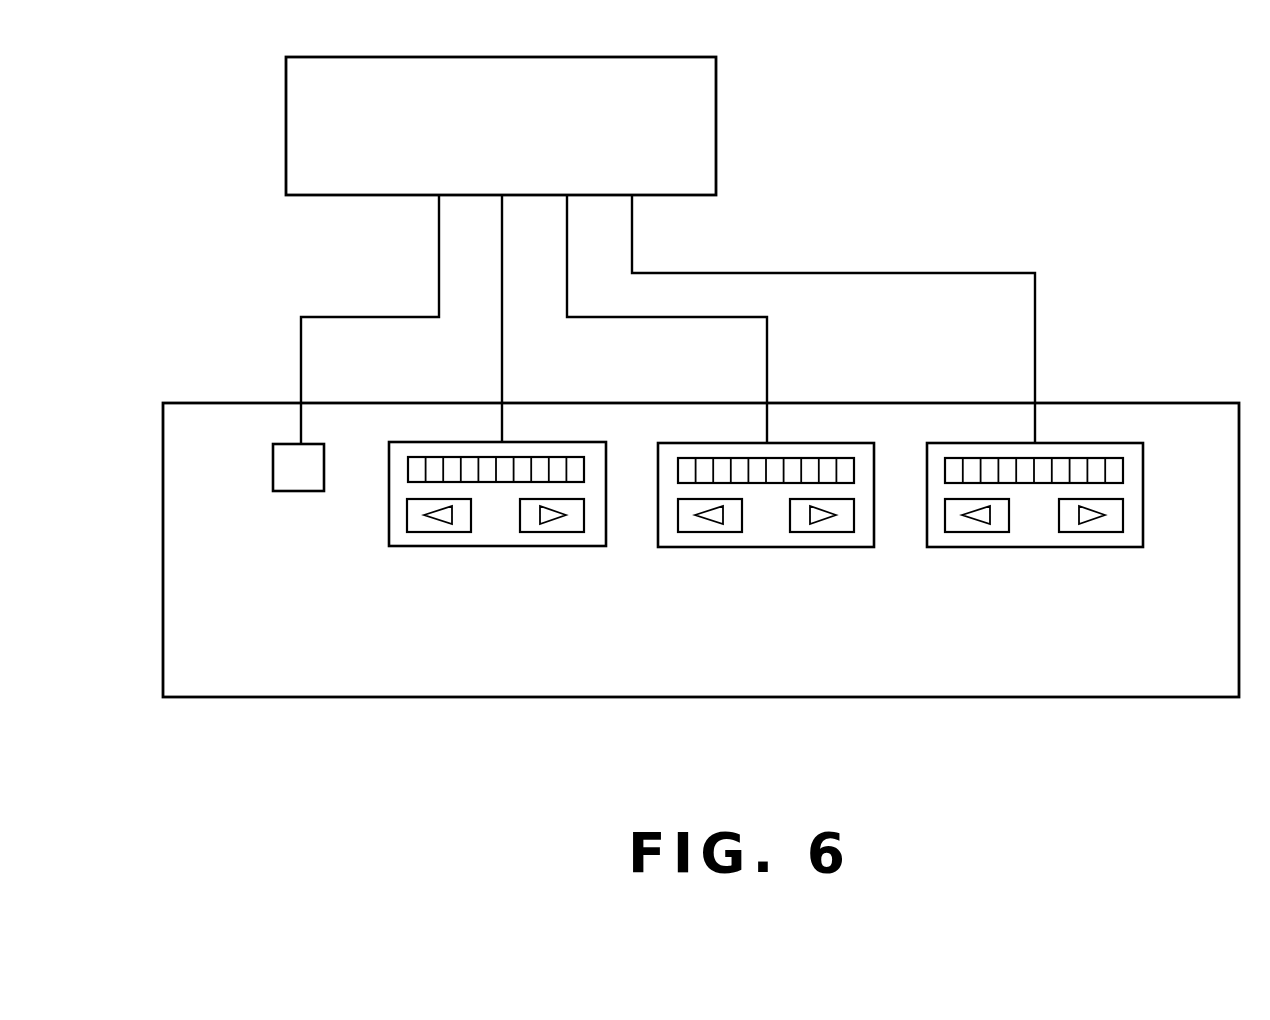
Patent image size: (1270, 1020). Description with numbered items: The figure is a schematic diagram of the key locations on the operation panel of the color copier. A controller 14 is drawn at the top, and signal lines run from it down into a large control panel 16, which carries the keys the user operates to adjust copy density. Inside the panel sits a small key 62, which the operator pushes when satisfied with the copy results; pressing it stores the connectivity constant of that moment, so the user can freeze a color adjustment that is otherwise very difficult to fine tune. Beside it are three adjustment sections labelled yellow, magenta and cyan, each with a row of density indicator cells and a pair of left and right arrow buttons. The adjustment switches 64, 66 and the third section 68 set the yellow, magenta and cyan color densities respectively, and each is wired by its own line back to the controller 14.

The controller 14 is at (716, 93).
The control panel 16 is at (400, 692).
The key 62 is at (317, 484).
The yellow adjustment switch 64 is at (598, 538).
The magenta adjustment switch 66 is at (866, 538).
The cyan adjustment section 68 is at (1135, 538).